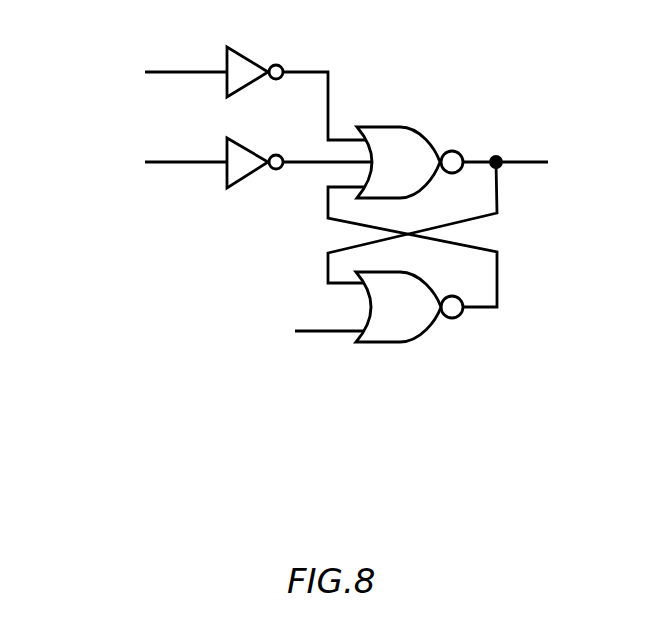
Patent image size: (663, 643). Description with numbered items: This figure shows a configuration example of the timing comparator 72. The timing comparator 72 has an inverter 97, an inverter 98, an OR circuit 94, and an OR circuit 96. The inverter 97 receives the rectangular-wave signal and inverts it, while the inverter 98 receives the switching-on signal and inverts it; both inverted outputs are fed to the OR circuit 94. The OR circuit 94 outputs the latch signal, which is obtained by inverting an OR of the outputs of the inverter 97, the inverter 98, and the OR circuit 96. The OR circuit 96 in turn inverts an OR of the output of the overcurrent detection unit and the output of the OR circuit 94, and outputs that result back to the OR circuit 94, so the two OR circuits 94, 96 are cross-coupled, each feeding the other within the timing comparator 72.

The timing comparator 72 is at (373, 481).
The OR circuit 94 is at (407, 128).
The OR circuit 96 is at (412, 338).
The inverter 97 is at (245, 52).
The inverter 98 is at (240, 181).